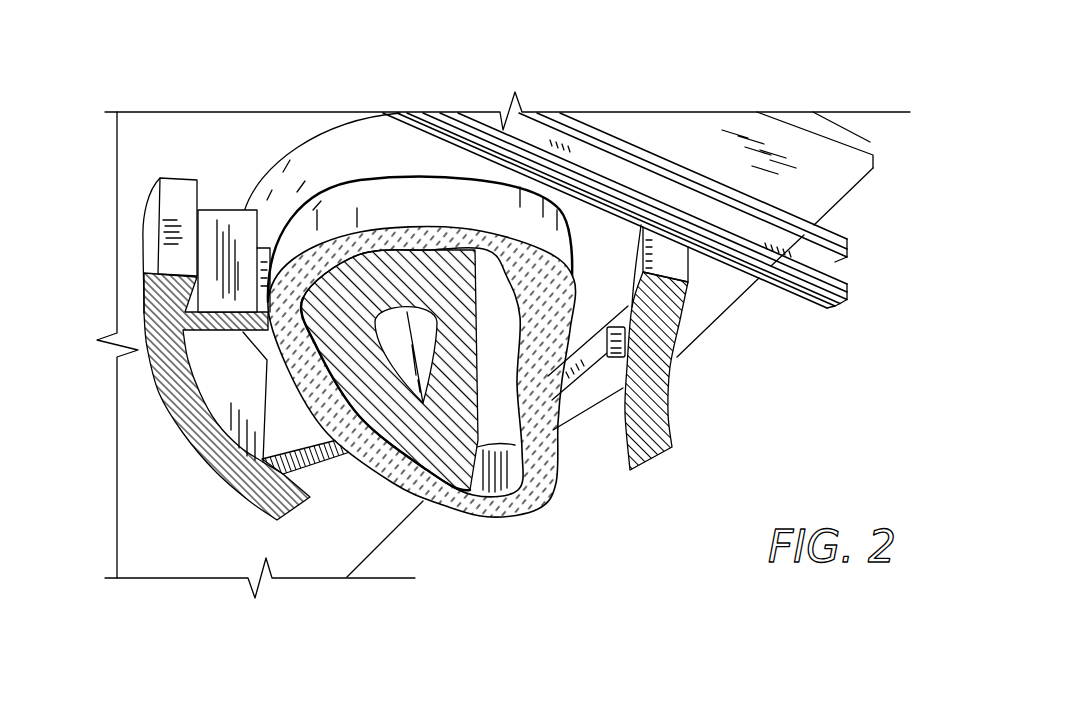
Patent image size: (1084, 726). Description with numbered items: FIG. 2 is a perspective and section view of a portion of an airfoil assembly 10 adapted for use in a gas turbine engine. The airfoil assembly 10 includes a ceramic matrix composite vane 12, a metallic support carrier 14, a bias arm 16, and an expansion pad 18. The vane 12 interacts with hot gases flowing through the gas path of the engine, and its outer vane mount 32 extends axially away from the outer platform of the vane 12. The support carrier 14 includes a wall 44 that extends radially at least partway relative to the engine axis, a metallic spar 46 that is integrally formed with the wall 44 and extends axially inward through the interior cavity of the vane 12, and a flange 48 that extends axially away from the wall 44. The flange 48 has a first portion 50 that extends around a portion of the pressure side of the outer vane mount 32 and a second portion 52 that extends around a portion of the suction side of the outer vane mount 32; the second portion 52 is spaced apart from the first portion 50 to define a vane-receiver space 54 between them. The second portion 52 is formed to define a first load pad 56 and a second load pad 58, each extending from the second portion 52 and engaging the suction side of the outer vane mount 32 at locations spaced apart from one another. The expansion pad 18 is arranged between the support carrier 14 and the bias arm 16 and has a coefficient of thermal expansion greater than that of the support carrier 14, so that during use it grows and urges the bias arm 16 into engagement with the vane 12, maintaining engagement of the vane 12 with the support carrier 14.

The airfoil assembly 10 is at (150, 80).
The vane 12 is at (384, 124).
The support carrier 14 is at (279, 138).
The bias arm 16 is at (597, 307).
The expansion pad 18 is at (612, 375).
The outer vane mount 32 is at (457, 175).
The wall 44 is at (251, 158).
The metallic spar 46 is at (373, 265).
The flange 48 is at (139, 164).
The first portion 50 is at (700, 368).
The second portion 52 is at (144, 404).
The vane-receiver space 54 is at (567, 487).
The first load pad 56 is at (243, 348).
The second load pad 58 is at (335, 476).